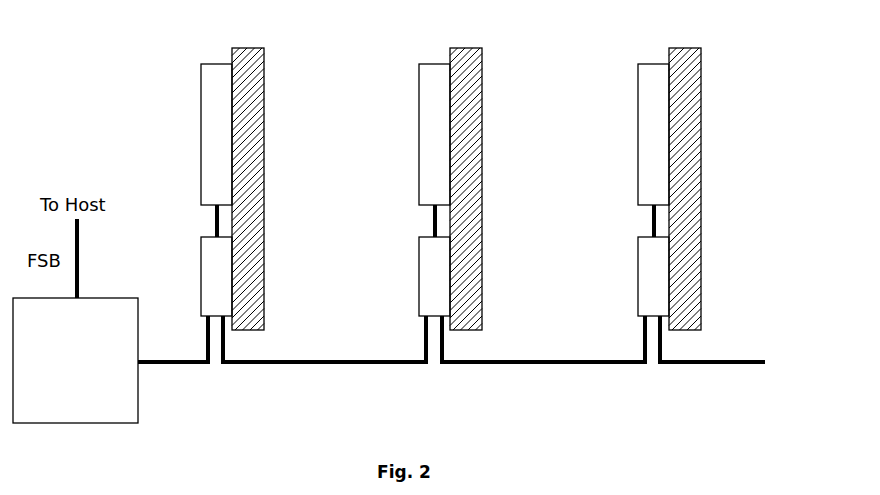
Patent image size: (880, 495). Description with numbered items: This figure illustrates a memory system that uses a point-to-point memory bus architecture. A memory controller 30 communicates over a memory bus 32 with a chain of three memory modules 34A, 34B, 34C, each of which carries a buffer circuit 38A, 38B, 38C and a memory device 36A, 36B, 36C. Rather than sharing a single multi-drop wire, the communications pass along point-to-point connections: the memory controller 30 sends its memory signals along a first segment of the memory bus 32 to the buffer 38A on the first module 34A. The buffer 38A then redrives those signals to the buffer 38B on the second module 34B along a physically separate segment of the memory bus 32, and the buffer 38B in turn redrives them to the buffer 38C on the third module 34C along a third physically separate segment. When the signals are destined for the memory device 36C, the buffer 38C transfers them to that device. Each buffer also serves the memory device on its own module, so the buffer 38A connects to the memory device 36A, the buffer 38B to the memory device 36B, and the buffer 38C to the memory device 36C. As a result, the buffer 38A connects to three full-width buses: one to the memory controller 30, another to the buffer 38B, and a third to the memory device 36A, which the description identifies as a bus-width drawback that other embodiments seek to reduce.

The memory controller 30 is at (65, 394).
The memory bus 32 is at (572, 416).
The module 34A is at (264, 95).
The module 34B is at (482, 95).
The module 34C is at (701, 95).
The memory device 36A is at (201, 135).
The memory device 36B is at (419, 135).
The memory device 36C is at (638, 135).
The buffer 38A is at (201, 267).
The buffer 38B is at (419, 267).
The buffer 38C is at (638, 267).